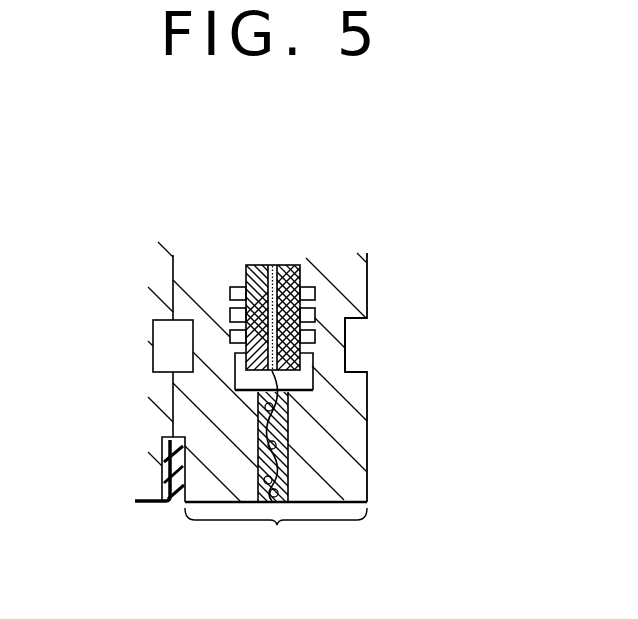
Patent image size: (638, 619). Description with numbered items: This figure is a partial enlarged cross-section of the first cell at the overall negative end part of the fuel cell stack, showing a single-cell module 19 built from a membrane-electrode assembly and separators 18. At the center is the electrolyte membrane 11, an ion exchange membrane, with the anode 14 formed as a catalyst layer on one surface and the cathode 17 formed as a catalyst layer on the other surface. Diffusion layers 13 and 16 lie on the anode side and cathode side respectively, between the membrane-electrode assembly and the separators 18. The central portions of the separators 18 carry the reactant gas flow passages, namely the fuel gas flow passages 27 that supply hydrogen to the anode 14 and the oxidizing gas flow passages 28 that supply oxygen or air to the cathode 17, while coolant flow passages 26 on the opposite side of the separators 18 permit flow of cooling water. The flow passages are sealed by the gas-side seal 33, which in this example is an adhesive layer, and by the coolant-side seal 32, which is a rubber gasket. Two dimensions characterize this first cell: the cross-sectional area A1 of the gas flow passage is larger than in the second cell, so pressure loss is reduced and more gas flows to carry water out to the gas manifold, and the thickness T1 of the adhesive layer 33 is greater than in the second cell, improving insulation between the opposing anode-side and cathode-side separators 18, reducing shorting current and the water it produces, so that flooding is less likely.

The electrolyte membrane 11 is at (273, 266).
The diffusion layer 13 is at (228, 325).
The anode 14 is at (228, 300).
The diffusion layer 16 is at (316, 323).
The cathode 17 is at (315, 296).
The separator 18 is at (212, 411).
The module 19 is at (276, 536).
The coolant flow passage 26 is at (182, 355).
The fuel gas flow passage 27 is at (230, 289).
The oxidizing gas flow passage 28 is at (303, 292).
The coolant-side seal 32 is at (162, 464).
The gas-side seal 33 is at (285, 433).
The cross-sectional area of the gas flow passage A1 is at (240, 287).
The thickness of the adhesive layer T1 is at (233, 487).